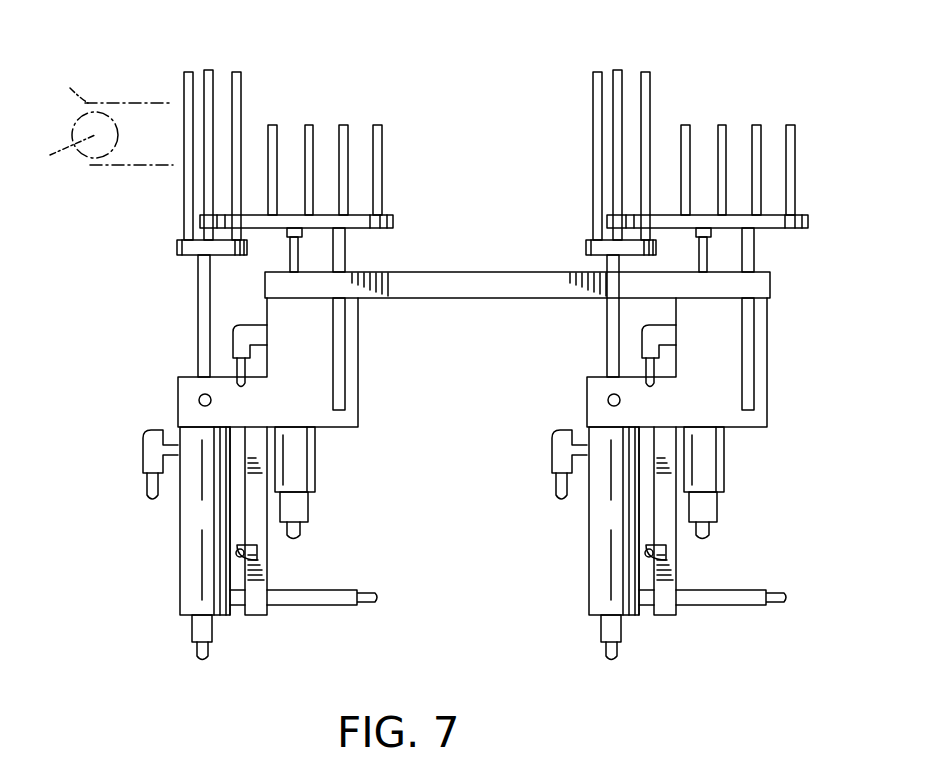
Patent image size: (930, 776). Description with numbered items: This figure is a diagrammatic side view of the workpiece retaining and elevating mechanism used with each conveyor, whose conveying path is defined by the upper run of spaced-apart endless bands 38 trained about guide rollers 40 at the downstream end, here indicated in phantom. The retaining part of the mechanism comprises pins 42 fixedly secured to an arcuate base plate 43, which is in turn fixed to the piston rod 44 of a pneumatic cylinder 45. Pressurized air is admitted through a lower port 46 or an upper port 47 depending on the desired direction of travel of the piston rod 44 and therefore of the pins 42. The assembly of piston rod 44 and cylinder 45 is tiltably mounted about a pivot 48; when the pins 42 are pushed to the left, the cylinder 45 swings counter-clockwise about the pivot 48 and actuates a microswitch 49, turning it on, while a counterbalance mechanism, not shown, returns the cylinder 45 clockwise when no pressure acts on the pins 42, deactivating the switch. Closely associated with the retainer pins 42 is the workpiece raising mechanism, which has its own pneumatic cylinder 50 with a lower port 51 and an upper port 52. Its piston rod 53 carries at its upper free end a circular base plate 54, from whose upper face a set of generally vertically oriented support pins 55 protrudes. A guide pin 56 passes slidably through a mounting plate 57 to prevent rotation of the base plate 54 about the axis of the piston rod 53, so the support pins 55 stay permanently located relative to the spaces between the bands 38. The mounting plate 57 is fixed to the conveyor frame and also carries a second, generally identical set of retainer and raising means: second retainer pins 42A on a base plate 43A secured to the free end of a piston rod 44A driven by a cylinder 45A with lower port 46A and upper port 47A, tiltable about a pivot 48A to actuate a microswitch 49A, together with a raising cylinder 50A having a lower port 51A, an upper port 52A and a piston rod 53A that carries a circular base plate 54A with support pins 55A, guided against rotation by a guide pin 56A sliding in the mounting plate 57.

The endless bands 38 is at (104, 83).
The guide rollers 40 is at (94, 148).
The pins 42 is at (248, 60).
The second retainer pins 42A is at (600, 136).
The arcuate base plate 43 is at (180, 257).
The base plate 43A is at (587, 222).
The piston rod 44 is at (198, 323).
The piston rod 44A is at (568, 316).
The pneumatic cylinder 45 is at (190, 545).
The pneumatic cylinder 45A is at (581, 521).
The lower port 46 is at (200, 652).
The lower port 46A is at (572, 637).
The upper port 47 is at (143, 456).
The upper port 47A is at (538, 462).
The pivot 48 is at (199, 400).
The pivot 48A is at (557, 401).
The microswitch 49 is at (255, 552).
The microswitch 49A is at (715, 521).
The pneumatic cylinder 50 is at (295, 456).
The pneumatic cylinder 50A is at (743, 459).
The lower port 51 is at (300, 508).
The lower port 51A is at (744, 513).
The upper port 52 is at (247, 326).
The upper port 52A is at (595, 357).
The piston rod 53 is at (299, 252).
The piston rod 53A is at (778, 250).
The circular base plate 54 is at (398, 226).
The circular base plate 54A is at (753, 213).
The support pins 55 is at (312, 127).
The support pins 55A is at (783, 147).
The guide pin 56 is at (345, 343).
The guide pin 56A is at (799, 319).
The mounting plate 57 is at (533, 273).